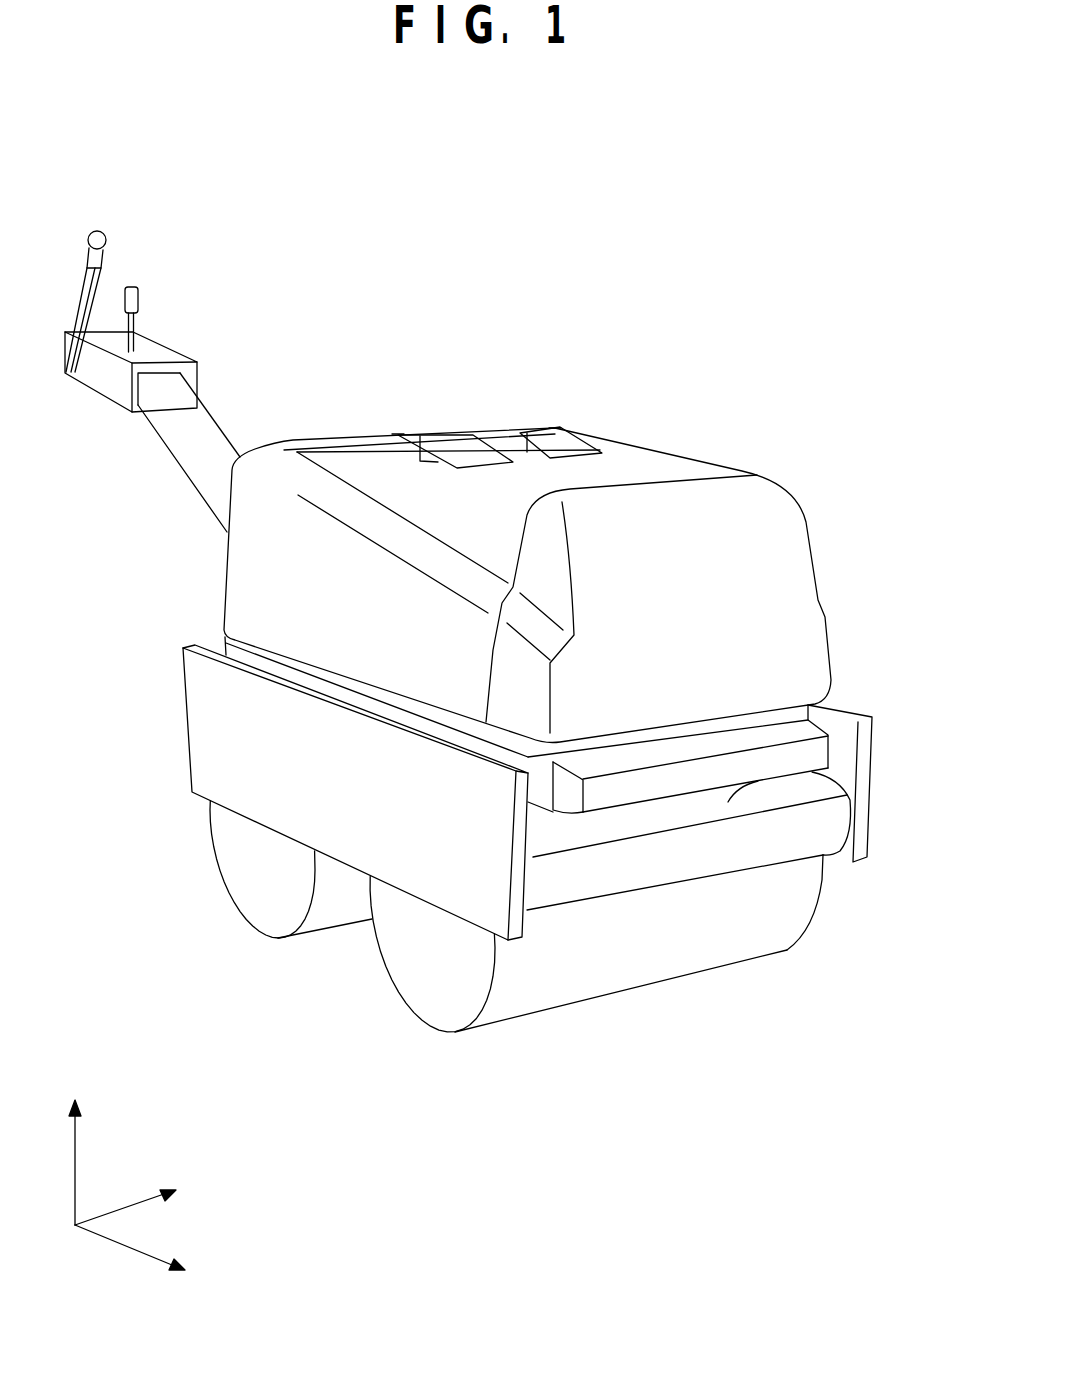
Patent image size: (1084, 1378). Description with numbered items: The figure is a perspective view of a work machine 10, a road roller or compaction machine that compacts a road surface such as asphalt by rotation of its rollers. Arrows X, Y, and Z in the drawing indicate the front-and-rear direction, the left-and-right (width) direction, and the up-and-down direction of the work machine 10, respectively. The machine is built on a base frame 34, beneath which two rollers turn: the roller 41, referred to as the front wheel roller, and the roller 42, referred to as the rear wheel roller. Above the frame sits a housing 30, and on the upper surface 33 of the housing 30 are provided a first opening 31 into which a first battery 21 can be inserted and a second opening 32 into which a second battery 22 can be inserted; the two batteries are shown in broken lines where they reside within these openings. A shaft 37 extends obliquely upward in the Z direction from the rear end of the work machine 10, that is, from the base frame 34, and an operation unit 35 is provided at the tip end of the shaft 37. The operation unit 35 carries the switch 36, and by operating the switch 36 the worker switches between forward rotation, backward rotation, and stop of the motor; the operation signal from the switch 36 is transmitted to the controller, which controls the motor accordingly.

The work machine 10 is at (393, 194).
The first battery 21 is at (398, 434).
The second battery 22 is at (563, 427).
The housing 30 is at (833, 630).
The first opening 31 is at (443, 455).
The second opening 32 is at (530, 424).
The upper surface 33 is at (652, 465).
The base frame 34 is at (728, 802).
The operation unit 35 is at (160, 343).
The switch 36 is at (131, 286).
The shaft 37 is at (180, 453).
The roller 41 is at (430, 964).
The roller 42 is at (257, 880).